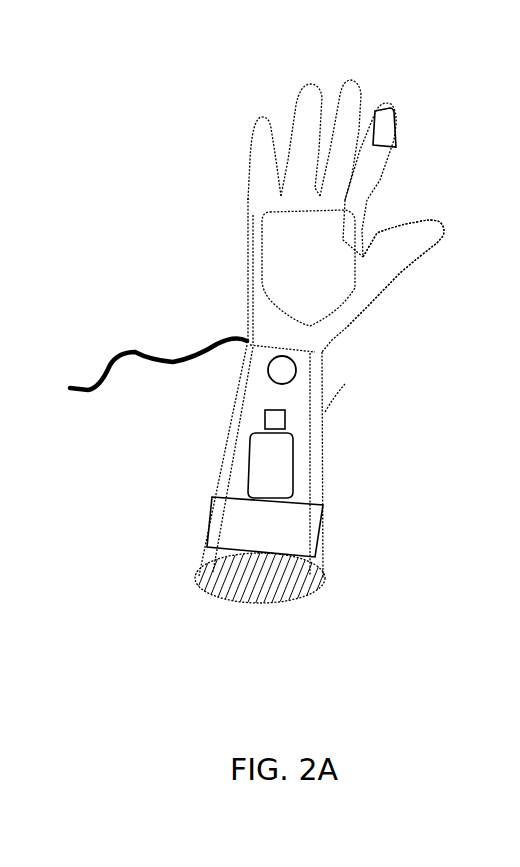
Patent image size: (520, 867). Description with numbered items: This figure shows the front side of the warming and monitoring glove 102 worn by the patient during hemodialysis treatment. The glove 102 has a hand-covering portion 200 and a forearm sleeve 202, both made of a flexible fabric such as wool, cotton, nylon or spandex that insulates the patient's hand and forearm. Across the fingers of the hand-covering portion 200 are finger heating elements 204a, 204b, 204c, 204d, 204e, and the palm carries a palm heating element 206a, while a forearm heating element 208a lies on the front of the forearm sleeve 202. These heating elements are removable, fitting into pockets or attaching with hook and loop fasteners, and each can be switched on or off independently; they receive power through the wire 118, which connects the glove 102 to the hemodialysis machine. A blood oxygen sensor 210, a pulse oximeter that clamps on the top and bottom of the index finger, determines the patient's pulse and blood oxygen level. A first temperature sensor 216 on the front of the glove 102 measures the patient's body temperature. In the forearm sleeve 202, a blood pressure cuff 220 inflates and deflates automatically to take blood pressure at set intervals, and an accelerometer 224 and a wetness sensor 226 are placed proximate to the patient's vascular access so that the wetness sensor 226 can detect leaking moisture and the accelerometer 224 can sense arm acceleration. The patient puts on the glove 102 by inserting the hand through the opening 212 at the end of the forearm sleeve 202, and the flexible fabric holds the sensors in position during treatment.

The glove 102 is at (250, 328).
The wire 118 is at (112, 360).
The hand-covering portion 200 is at (347, 315).
The forearm sleeve 202 is at (233, 463).
The finger heating element 204a is at (421, 225).
The finger heating element 204b is at (403, 143).
The finger heating element 204c is at (362, 95).
The finger heating element 204d is at (303, 111).
The finger heating element 204e is at (250, 160).
The palm heating element 206a is at (292, 277).
The forearm heating element 208a is at (367, 392).
The blood oxygen sensor 210 is at (385, 122).
The opening 212 is at (327, 560).
The first temperature sensor 216 is at (268, 371).
The blood pressure cuff 220 is at (232, 524).
The accelerometer 224 is at (286, 421).
The wetness sensor 226 is at (294, 470).